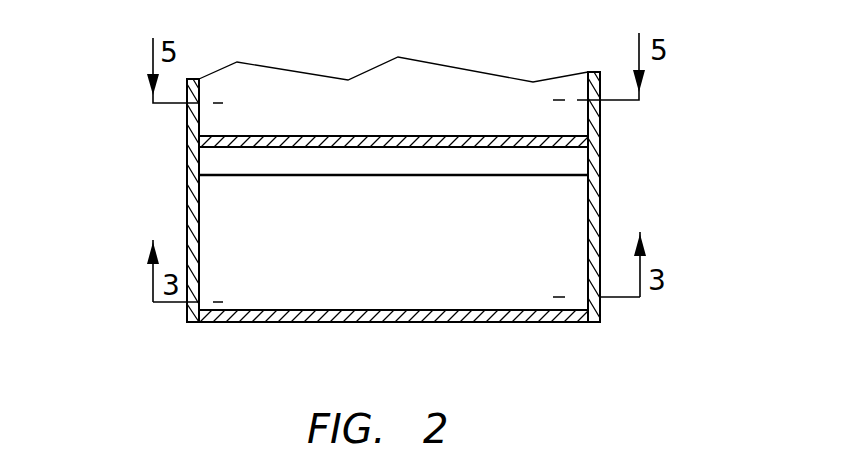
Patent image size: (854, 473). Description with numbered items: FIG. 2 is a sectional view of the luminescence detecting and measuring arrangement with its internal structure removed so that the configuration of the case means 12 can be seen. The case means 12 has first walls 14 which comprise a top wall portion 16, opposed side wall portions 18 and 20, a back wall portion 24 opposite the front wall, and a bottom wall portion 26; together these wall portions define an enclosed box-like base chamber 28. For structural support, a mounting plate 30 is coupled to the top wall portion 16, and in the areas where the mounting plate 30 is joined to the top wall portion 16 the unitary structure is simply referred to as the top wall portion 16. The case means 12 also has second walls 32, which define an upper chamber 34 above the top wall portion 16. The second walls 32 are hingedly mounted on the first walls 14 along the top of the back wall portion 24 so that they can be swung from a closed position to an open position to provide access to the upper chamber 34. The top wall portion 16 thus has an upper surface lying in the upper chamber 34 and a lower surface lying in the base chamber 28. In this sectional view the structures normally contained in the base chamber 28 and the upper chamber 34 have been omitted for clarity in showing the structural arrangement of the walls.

The case means 12 is at (388, 229).
The first walls 14 is at (604, 211).
The top wall portion 16 is at (322, 135).
The side wall portion 18 is at (187, 218).
The side wall portion 20 is at (601, 187).
The back wall portion 24 is at (230, 200).
The bottom wall portion 26 is at (497, 323).
The base chamber 28 is at (416, 236).
The mounting plate 30 is at (445, 176).
The second walls 32 is at (598, 80).
The upper chamber 34 is at (428, 104).